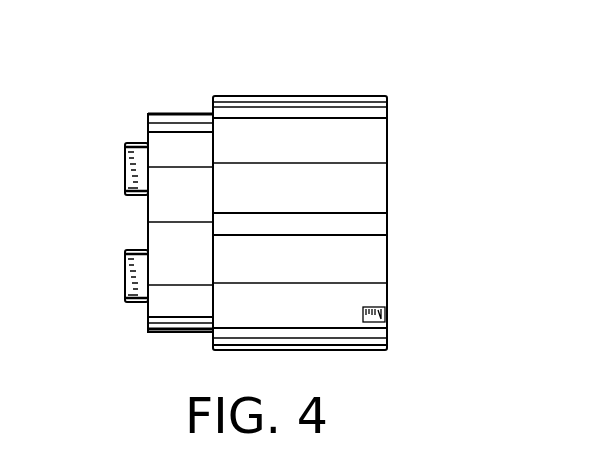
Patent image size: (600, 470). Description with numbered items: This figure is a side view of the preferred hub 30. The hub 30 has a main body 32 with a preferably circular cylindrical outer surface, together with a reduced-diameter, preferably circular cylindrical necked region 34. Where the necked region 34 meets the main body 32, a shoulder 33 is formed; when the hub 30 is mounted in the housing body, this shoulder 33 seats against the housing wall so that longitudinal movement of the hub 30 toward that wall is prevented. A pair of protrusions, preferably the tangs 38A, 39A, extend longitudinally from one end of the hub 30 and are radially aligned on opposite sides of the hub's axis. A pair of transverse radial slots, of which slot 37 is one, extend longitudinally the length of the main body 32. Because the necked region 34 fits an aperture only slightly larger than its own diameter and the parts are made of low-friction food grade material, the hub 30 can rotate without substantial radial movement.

The hub 30 is at (245, 216).
The main body 32 is at (283, 95).
The shoulder 33 is at (212, 102).
The necked region 34 is at (175, 318).
The tang 38A is at (125, 263).
The tang 39A is at (123, 157).
The transverse radial slot 37 is at (541, 458).